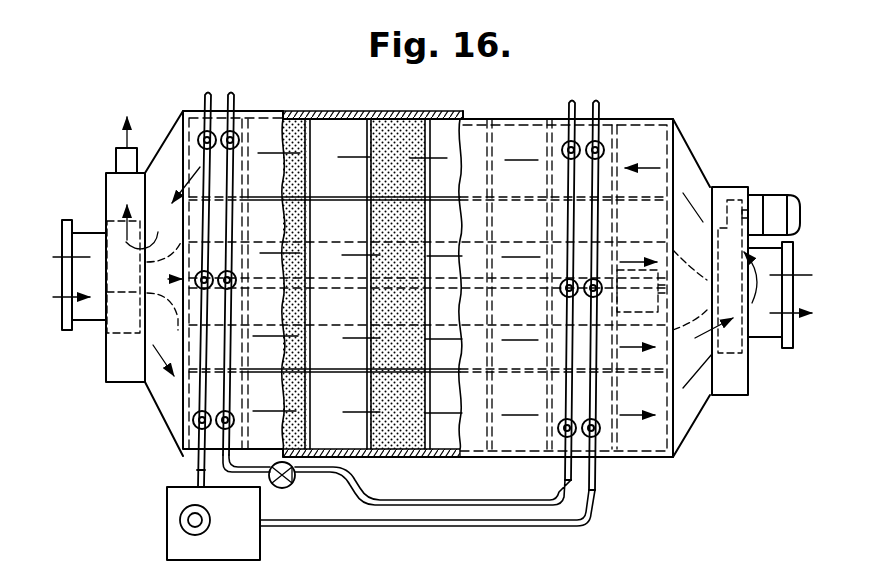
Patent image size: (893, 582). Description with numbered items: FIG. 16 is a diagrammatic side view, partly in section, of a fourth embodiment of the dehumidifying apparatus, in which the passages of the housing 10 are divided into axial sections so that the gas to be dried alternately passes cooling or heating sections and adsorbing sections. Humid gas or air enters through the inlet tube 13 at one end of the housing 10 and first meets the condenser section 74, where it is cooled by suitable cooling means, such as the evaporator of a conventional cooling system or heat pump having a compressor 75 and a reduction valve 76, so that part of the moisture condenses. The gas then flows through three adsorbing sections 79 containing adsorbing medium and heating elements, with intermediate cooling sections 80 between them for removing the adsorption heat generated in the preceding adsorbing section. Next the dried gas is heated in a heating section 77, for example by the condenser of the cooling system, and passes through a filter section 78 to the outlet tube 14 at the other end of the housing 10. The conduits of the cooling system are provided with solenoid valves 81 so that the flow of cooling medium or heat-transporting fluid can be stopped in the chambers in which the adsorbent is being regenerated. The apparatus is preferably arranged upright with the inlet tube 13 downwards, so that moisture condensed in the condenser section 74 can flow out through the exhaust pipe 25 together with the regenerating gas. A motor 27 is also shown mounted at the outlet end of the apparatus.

The housing 10 is at (158, 424).
The inlet tube 13 is at (68, 222).
The outlet tube 14 is at (762, 338).
The exhaust pipe 25 is at (116, 155).
The motor 27 is at (776, 195).
The condenser section 74 is at (213, 118).
The compressor 75 is at (262, 543).
The reduction valve 76 is at (287, 485).
The heating section 77 is at (582, 124).
The filter section 78 is at (655, 127).
The adsorbing sections 79 is at (293, 117).
The intermediate cooling sections 80 is at (343, 122).
The solenoid valves 81 is at (200, 133).